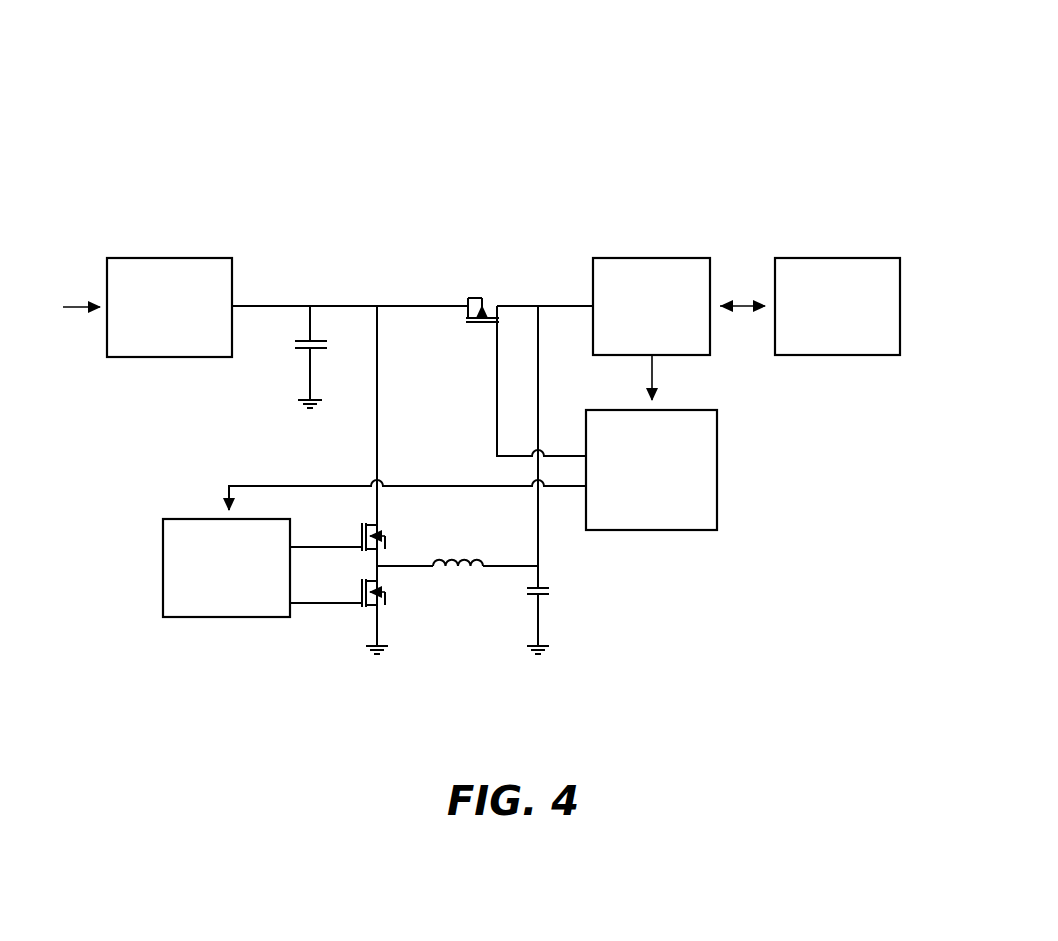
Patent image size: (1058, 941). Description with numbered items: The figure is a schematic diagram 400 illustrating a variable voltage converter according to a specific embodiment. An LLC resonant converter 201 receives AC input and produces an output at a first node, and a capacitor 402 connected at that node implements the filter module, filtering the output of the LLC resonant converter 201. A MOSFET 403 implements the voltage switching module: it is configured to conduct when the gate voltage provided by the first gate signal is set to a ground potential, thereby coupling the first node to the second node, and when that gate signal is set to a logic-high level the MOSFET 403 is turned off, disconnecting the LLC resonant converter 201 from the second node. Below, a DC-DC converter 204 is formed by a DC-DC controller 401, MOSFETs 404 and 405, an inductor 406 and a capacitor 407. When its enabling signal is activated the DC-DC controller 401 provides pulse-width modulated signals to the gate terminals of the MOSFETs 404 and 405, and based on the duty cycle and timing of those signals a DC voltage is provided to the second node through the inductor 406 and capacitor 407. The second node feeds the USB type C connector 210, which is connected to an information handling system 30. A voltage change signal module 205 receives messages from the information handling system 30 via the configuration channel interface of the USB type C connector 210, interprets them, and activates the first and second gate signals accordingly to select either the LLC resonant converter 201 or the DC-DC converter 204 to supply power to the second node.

The schematic diagram 400 is at (740, 85).
The LLC resonant converter 201 is at (168, 258).
The USB type C connector 210 is at (650, 258).
The information handling system 30 is at (837, 258).
The voltage change signal module 205 is at (717, 468).
The DC-DC controller 401 is at (163, 566).
The DC-DC converter 204 is at (228, 661).
The capacitor 402 is at (282, 349).
The MOSFET 403 is at (457, 288).
The MOSFET 404 is at (348, 529).
The MOSFET 405 is at (348, 588).
The inductor 406 is at (447, 543).
The capacitor 407 is at (568, 584).